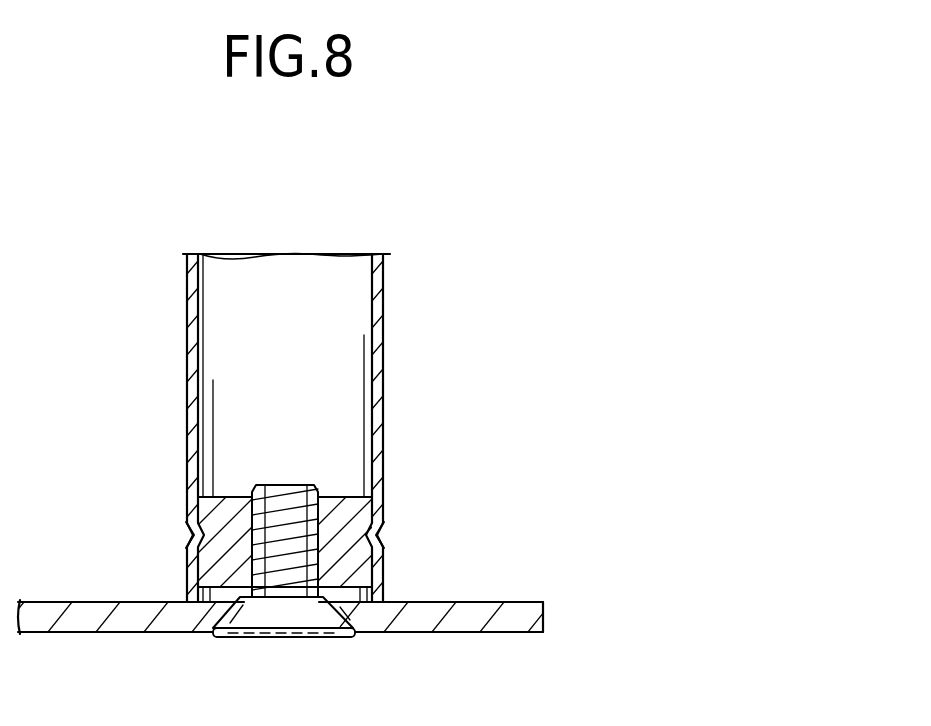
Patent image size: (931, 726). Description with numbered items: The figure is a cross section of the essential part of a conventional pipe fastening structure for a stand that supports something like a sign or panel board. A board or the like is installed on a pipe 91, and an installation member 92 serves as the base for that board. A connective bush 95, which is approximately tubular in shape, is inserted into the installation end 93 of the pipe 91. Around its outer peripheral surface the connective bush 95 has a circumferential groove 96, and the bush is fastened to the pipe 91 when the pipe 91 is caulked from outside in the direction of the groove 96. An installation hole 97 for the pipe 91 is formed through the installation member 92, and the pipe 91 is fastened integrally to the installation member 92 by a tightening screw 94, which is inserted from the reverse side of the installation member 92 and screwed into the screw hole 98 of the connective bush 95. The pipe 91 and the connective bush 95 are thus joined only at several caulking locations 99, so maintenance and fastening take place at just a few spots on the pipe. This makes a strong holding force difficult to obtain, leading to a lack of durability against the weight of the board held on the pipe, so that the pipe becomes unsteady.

The pipe 91 is at (386, 318).
The installation member 92 is at (518, 603).
The installation end 93 is at (383, 594).
The tightening screw 94 is at (292, 640).
The connective bush 95 is at (221, 495).
The circumferential groove 96 is at (189, 515).
The installation hole 97 is at (217, 641).
The screw hole 98 is at (309, 490).
The caulking locations 99 is at (187, 543).